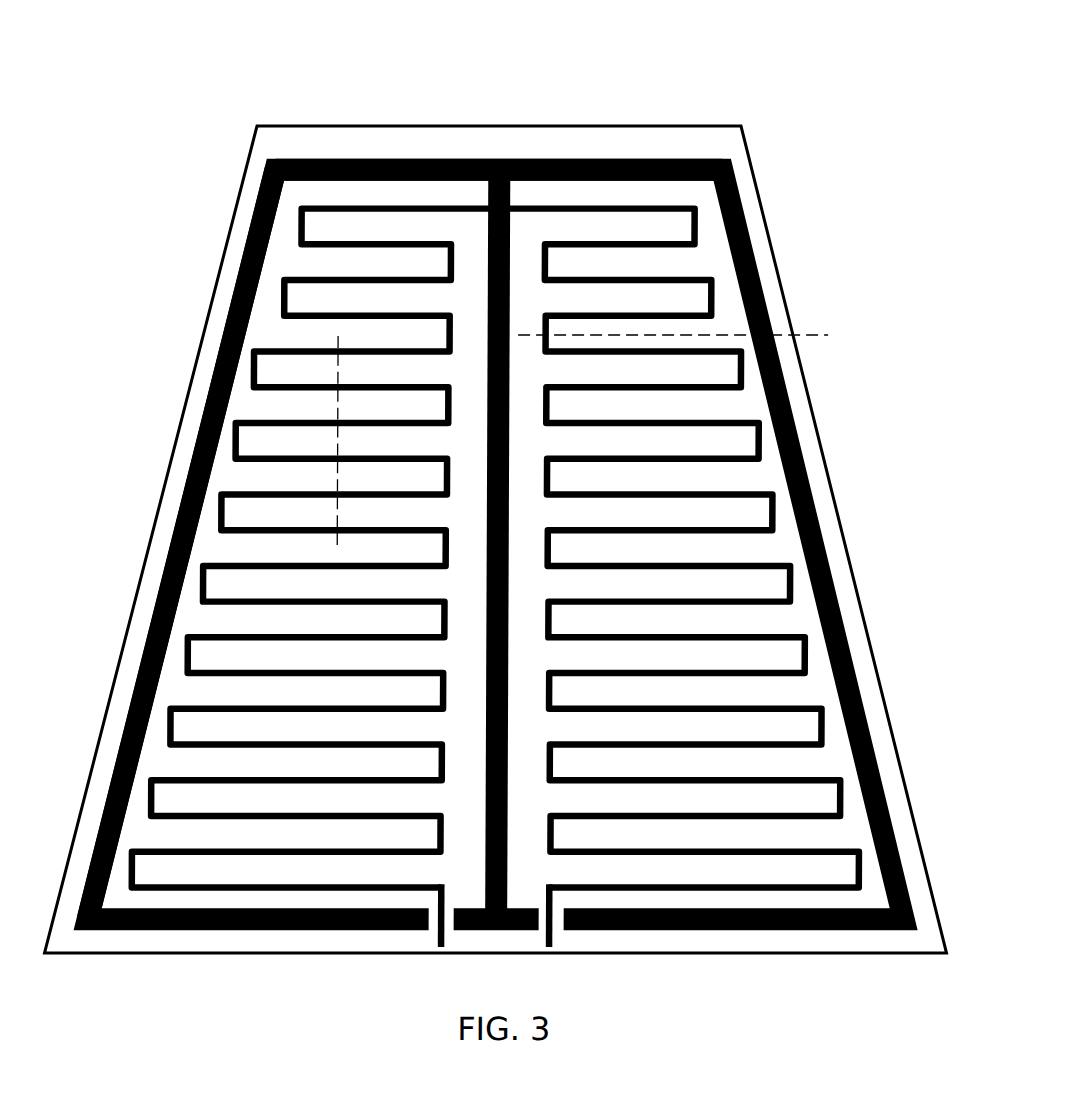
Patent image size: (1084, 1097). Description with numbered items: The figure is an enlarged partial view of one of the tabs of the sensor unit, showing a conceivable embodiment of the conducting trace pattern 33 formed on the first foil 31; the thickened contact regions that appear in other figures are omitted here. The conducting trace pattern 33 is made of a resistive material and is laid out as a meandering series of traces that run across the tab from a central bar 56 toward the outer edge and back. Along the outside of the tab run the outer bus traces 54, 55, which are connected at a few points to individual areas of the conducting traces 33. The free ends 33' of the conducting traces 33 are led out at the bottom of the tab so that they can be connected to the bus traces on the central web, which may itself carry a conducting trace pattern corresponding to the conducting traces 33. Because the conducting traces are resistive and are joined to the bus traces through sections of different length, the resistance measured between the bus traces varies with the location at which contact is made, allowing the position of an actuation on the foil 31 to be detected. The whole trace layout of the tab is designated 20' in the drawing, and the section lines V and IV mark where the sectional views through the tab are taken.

The heater panel 20' is at (498, 101).
The first foil 31 is at (815, 433).
The conducting trace pattern 33 is at (695, 548).
The free end of the conducting traces 33' is at (502, 954).
The outer bus trace 54 is at (832, 602).
The outer bus trace 55 is at (188, 462).
The central bus bar 56 is at (442, 475).
The section line V- V is at (335, 333).
The section line IV- IV is at (523, 336).